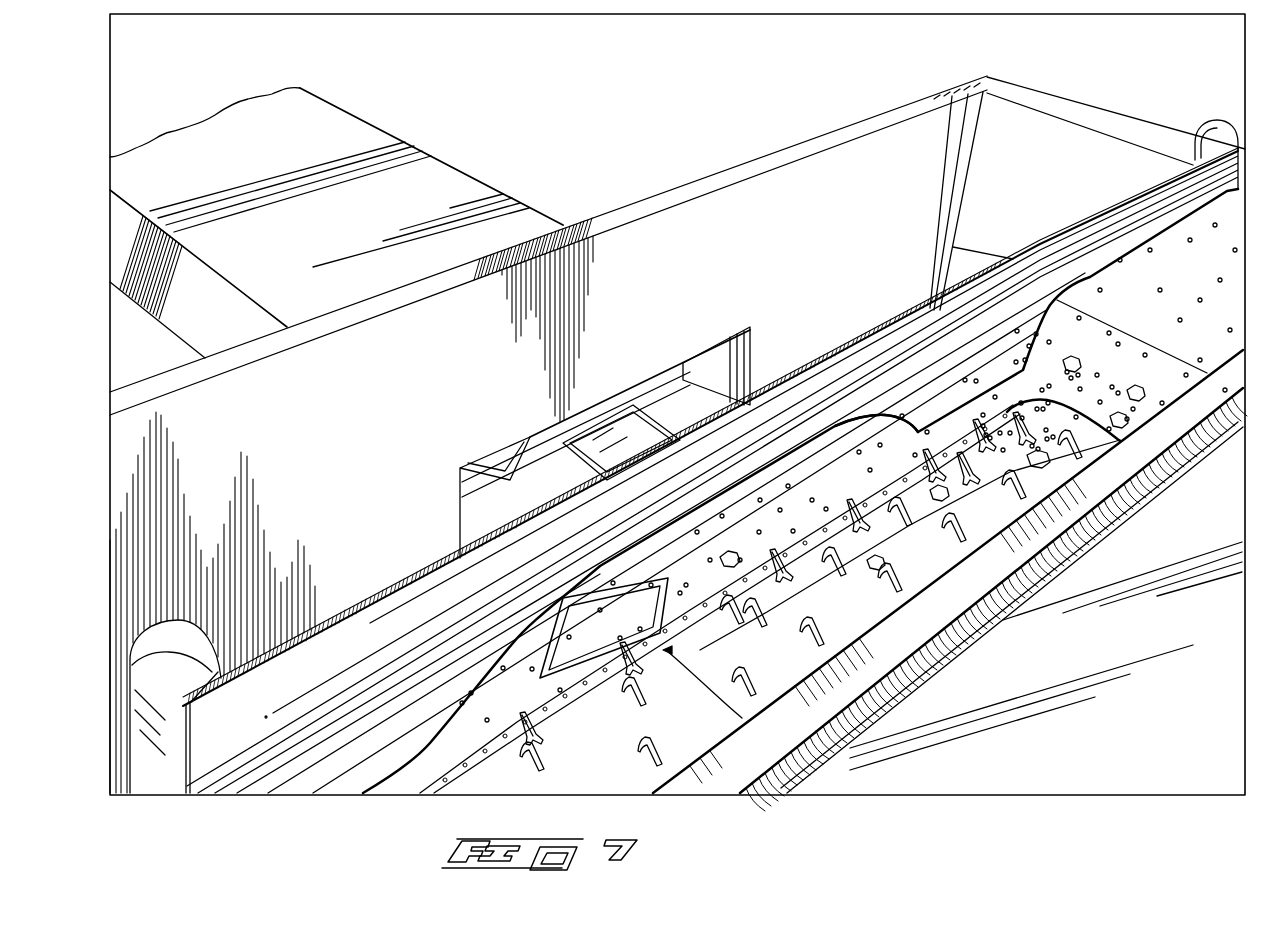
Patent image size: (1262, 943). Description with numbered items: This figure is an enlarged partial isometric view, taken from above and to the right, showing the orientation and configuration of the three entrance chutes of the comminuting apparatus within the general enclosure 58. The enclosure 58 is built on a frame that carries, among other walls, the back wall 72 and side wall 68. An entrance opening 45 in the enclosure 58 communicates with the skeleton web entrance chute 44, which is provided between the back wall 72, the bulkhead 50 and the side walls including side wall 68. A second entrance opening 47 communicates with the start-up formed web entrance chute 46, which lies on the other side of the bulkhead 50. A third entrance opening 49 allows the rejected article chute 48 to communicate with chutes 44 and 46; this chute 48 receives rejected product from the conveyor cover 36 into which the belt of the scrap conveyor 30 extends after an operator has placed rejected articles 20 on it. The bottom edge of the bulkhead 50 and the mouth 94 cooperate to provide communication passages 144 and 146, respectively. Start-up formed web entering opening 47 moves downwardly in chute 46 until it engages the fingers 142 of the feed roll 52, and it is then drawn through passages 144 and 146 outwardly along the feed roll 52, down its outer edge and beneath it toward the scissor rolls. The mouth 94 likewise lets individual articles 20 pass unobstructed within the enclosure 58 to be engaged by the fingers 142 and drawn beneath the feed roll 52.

The thermoformed articles 20 is at (590, 480).
The scrap conveyor 30 is at (480, 518).
The conveyor cover 36 is at (433, 170).
The skeleton web entrance chute 44 is at (1050, 137).
The entrance opening 45 is at (876, 152).
The start-up formed web entrance chute 46 is at (1160, 388).
The entrance opening 47 is at (1210, 217).
The rejected article chute 48 is at (697, 364).
The entrance opening 49 is at (740, 382).
The bulkhead 50 is at (236, 741).
The feed roll 52 is at (910, 665).
The general enclosure 58 is at (636, 183).
The side wall 68 is at (1040, 100).
The back wall 72 is at (715, 172).
The mouth 94 is at (483, 660).
The fingers 142 is at (772, 609).
The communication passage 144 is at (960, 428).
The communication passage 146 is at (817, 455).